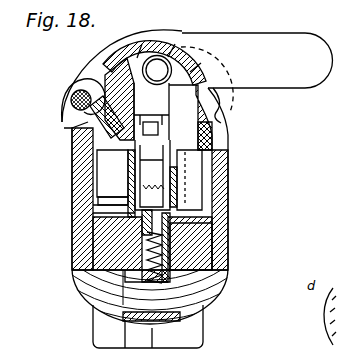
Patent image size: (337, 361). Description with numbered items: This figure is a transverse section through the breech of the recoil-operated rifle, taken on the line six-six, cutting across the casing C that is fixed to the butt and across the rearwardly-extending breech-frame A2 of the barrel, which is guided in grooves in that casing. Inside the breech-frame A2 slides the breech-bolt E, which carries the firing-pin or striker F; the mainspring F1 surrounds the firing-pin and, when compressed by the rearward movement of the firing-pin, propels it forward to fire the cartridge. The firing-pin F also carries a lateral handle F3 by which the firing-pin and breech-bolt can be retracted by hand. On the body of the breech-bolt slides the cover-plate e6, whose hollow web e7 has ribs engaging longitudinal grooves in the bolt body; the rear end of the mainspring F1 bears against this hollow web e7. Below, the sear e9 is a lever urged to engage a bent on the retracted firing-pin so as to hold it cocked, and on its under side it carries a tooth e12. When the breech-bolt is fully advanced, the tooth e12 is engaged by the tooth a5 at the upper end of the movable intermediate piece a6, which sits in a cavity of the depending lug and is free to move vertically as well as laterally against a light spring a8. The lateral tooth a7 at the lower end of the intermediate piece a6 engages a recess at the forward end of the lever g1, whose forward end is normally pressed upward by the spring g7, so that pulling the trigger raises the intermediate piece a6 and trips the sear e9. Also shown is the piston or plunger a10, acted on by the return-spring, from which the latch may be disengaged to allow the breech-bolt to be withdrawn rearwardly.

The lateral handle F3 is at (257, 60).
The firing-pin F is at (158, 110).
The mainspring F1 is at (153, 97).
The breech-frame A2 is at (227, 107).
The hollow web e7 is at (108, 55).
The cover-plate e6 is at (104, 58).
The breech-bolt E is at (66, 90).
The tooth a5 is at (214, 138).
The light spring a8 is at (229, 155).
The piston a10 is at (88, 113).
The lateral tooth a7 is at (112, 228).
The casing C is at (88, 128).
The sear e9 is at (128, 147).
The tooth e12 is at (96, 196).
The intermediate piece a6 is at (172, 200).
The lever g1 is at (200, 227).
The spring g7 is at (165, 256).